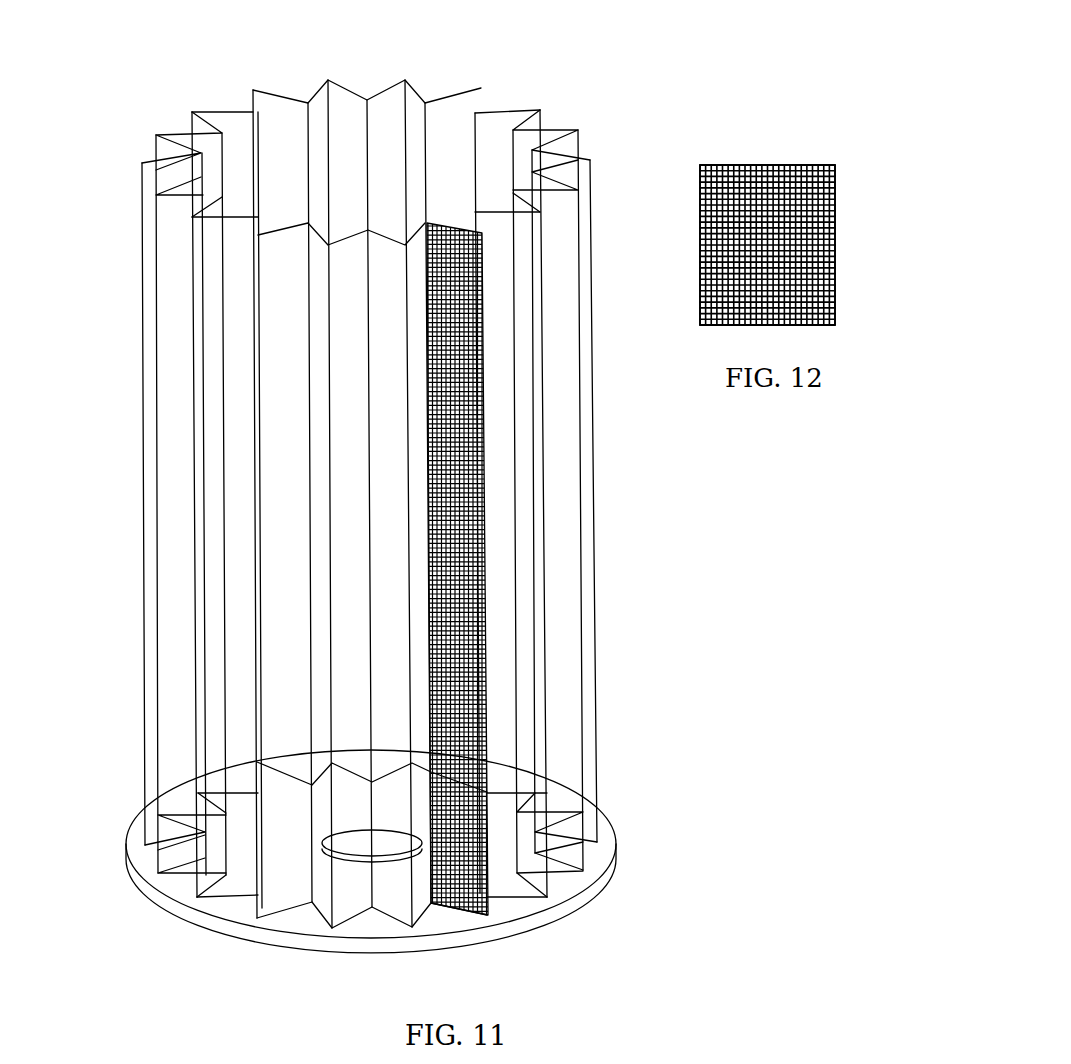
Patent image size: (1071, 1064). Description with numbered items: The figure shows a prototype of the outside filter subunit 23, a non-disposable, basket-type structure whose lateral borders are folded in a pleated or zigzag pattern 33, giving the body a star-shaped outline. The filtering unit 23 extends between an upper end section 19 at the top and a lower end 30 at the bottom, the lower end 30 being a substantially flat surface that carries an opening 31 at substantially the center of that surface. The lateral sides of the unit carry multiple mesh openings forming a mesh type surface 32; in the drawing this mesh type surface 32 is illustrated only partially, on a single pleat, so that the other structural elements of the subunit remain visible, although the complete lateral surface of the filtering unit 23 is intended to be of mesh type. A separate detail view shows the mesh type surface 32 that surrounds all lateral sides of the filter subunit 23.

In FIG. 11, the upper end section 19 is at (382, 137).
In FIG. 11, the filter subunit 23 is at (224, 512).
In FIG. 11, the lower end 30 is at (562, 882).
In FIG. 11, the opening 31 is at (322, 847).
In FIG. 11, the mesh type surface 32 is at (470, 519).
In FIG. 12, the mesh type surface 32 is at (836, 255).
In FIG. 11, the zigzag pattern 33 is at (570, 175).